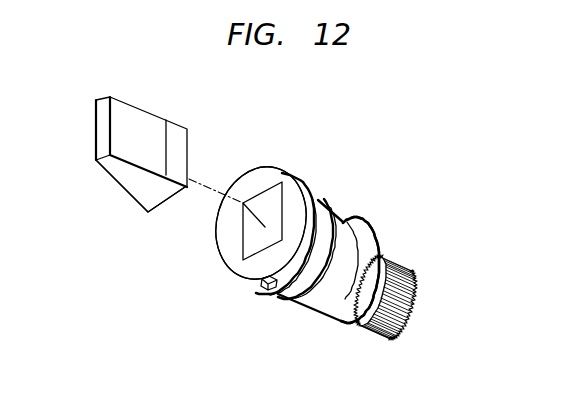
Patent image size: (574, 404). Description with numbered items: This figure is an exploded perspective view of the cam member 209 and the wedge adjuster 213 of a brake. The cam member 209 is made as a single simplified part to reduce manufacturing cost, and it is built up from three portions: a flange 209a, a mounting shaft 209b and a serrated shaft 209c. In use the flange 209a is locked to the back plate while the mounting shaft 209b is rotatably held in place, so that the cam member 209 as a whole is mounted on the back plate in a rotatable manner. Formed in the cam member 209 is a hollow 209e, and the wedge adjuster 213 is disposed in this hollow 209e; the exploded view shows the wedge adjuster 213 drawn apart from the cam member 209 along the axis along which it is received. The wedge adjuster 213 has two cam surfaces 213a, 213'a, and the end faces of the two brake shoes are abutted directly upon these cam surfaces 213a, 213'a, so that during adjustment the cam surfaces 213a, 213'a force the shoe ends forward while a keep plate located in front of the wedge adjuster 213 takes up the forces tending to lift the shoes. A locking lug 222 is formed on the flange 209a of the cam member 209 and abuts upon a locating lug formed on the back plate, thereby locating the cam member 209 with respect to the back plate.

The wedge adjuster 213 is at (143, 137).
The cam surface 213a is at (152, 155).
The cam surface 213'a is at (122, 195).
The cam member 209 is at (358, 203).
The flange 209a is at (300, 172).
The mounting shaft 209b is at (325, 308).
The serrated shaft 209c is at (387, 332).
The hollow 209e is at (248, 238).
The locking lug 222 is at (270, 290).